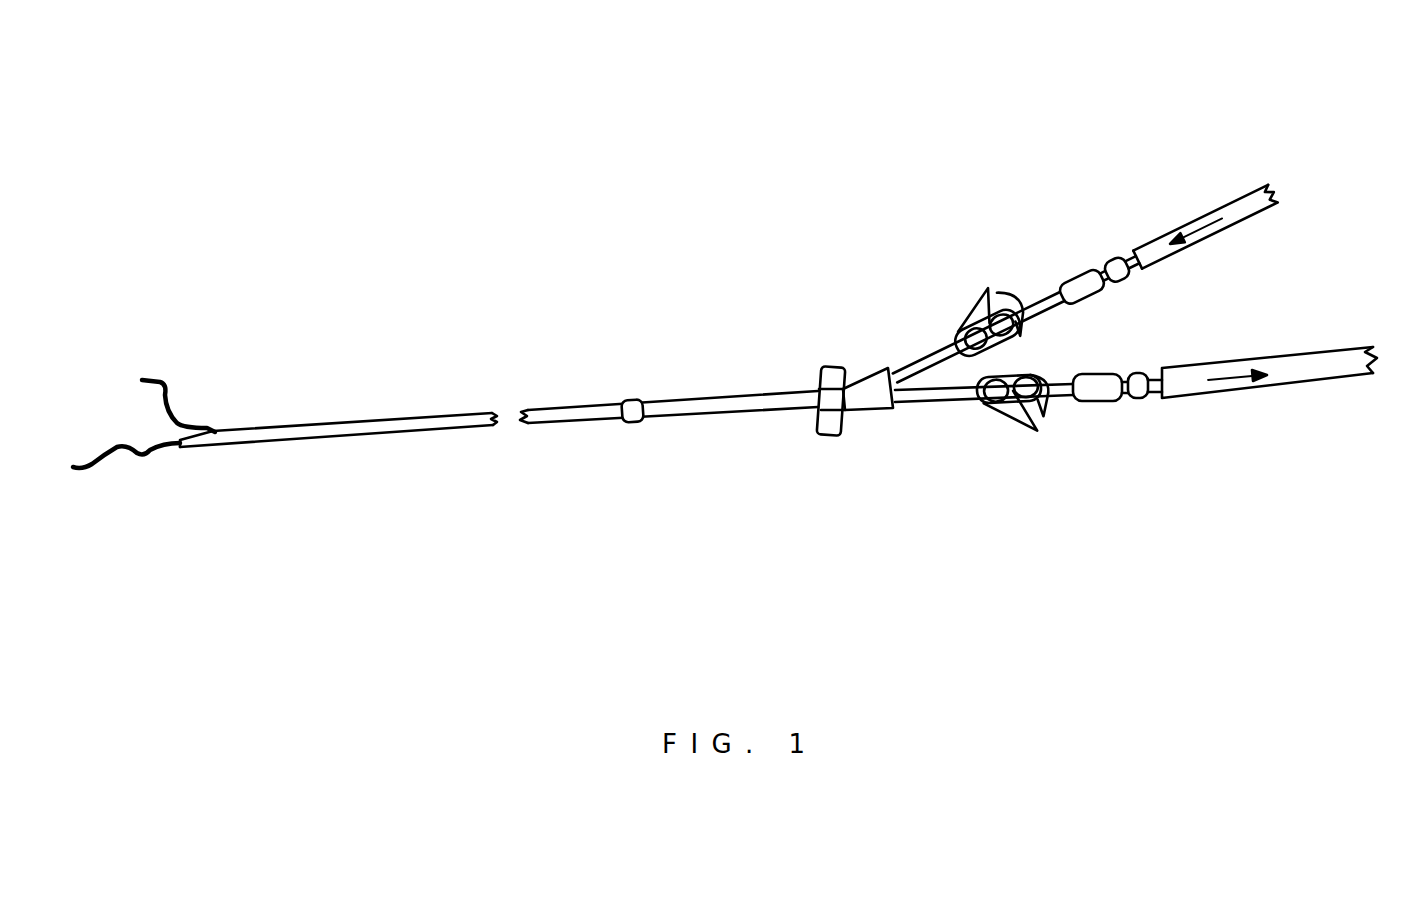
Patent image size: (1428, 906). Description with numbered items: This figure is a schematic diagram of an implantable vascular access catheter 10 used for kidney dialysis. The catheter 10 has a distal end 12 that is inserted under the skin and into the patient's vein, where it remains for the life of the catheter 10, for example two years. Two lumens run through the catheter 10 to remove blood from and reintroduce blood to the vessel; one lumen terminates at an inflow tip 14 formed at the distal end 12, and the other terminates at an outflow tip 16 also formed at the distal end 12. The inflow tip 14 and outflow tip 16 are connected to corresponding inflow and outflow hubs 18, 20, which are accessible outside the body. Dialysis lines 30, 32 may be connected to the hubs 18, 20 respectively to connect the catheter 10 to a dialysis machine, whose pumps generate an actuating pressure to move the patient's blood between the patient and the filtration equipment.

The catheter 10 is at (548, 415).
The distal end 12 is at (167, 400).
The inflow tip 14 is at (145, 457).
The outflow tip 16 is at (250, 437).
The inflow hub 18 is at (1107, 257).
The outflow hub 20 is at (1137, 387).
The dialysis line 30 is at (1243, 197).
The dialysis line 32 is at (1327, 365).